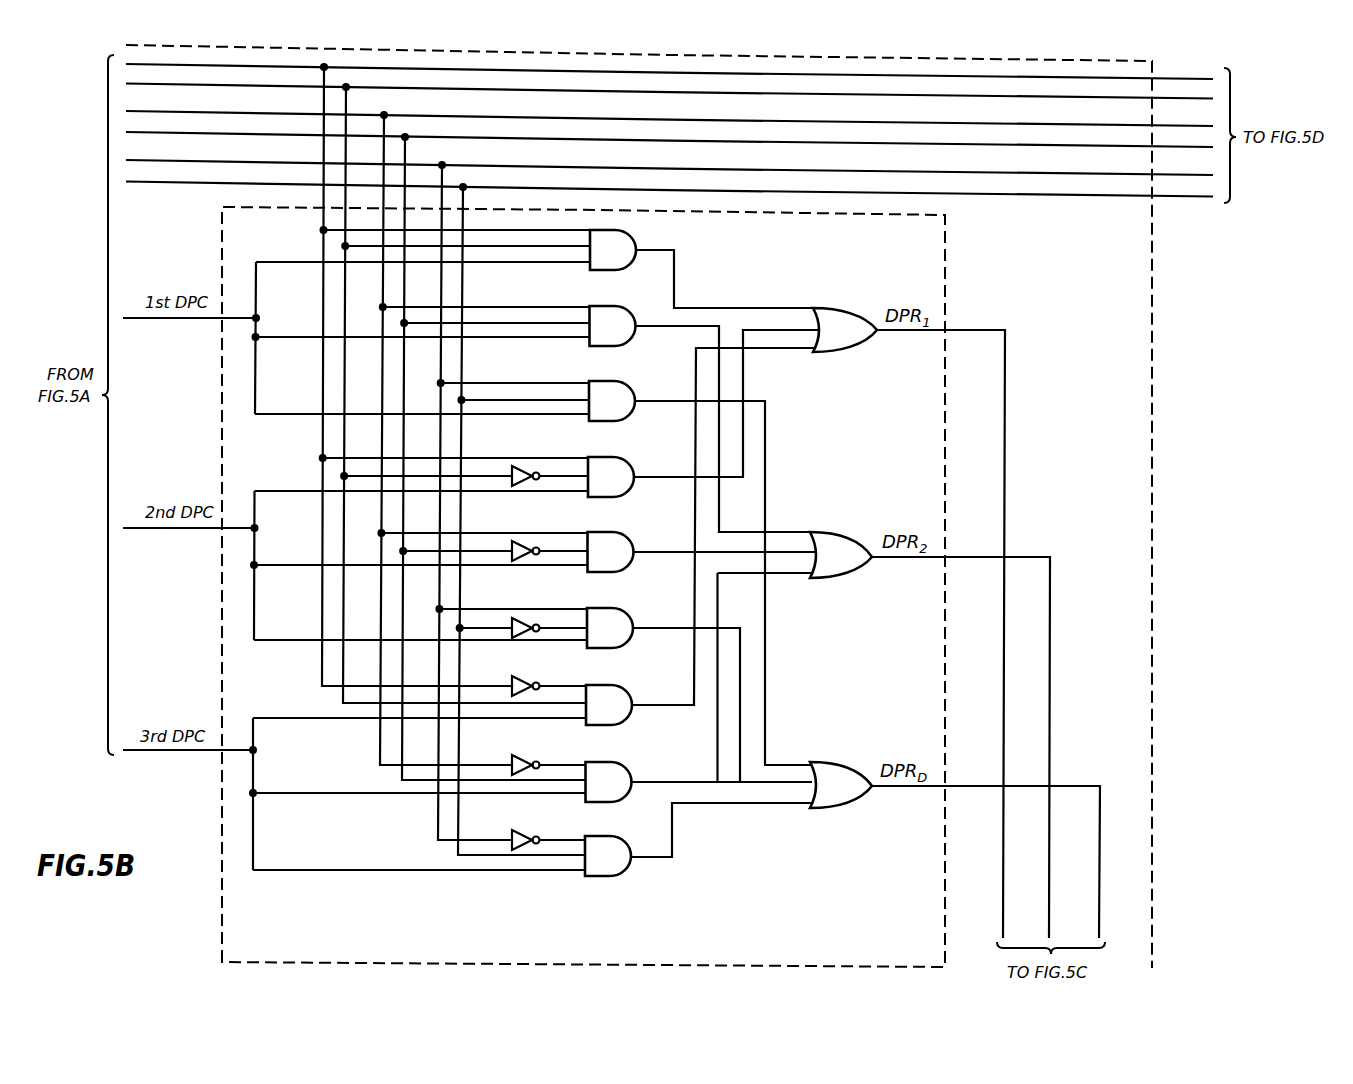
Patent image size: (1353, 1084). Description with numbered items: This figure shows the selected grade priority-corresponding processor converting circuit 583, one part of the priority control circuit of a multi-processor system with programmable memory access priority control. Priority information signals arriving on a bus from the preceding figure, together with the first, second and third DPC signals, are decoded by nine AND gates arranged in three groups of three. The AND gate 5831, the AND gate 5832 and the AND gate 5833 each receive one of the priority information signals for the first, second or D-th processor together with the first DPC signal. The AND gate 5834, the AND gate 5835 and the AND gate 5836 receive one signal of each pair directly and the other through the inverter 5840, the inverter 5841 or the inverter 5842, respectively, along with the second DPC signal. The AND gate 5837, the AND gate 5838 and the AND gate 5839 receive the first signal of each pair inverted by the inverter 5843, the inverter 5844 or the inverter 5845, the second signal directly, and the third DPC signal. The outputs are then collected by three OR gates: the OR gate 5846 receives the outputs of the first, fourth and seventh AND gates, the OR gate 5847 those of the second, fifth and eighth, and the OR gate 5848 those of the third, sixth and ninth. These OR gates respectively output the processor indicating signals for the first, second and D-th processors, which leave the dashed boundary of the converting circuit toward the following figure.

The selected grade priority-corresponding processor converting circuit 583 is at (583, 587).
The AND gate 5831 is at (608, 270).
The AND gate 5832 is at (608, 346).
The AND gate 5833 is at (608, 421).
The AND gate 5834 is at (608, 497).
The AND gate 5835 is at (608, 572).
The AND gate 5836 is at (608, 648).
The AND gate 5837 is at (608, 725).
The AND gate 5838 is at (608, 802).
The AND gate 5839 is at (608, 876).
The inverter 5840 is at (522, 466).
The inverter 5841 is at (520, 541).
The inverter 5842 is at (520, 618).
The inverter 5843 is at (520, 676).
The inverter 5844 is at (520, 755).
The inverter 5845 is at (520, 830).
The OR gate 5846 is at (828, 312).
The OR gate 5847 is at (826, 533).
The OR gate 5848 is at (826, 763).